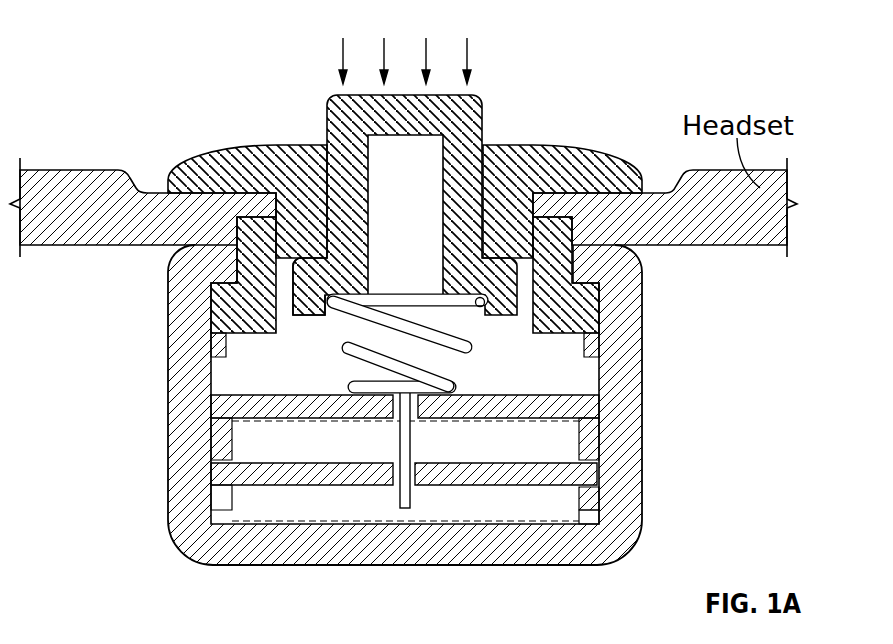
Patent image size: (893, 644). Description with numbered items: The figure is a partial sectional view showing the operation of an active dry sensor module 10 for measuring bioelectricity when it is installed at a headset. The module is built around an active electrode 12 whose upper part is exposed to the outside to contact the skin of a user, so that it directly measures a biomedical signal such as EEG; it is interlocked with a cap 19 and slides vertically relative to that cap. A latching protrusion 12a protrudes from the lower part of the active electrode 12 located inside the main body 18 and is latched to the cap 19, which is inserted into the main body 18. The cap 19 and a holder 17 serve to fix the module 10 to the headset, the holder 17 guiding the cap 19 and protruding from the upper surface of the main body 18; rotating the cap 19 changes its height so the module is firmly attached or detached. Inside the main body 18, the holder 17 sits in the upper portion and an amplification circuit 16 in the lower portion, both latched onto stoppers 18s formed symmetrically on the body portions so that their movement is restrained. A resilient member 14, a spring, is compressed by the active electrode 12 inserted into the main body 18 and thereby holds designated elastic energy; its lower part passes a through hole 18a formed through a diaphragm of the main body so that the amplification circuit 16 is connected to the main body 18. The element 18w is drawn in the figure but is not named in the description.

The active dry sensor module 10 is at (403, 300).
The active electrode 12 is at (476, 124).
The latching protrusion 12a is at (313, 316).
The resilient member 14 is at (469, 348).
The amplification circuit 16 is at (222, 477).
The holder 17 is at (215, 317).
The main body 18 is at (188, 508).
The through hole 18a is at (222, 407).
The stoppers 18s is at (593, 343).
The pin 18w is at (413, 417).
The cap 19 is at (587, 168).